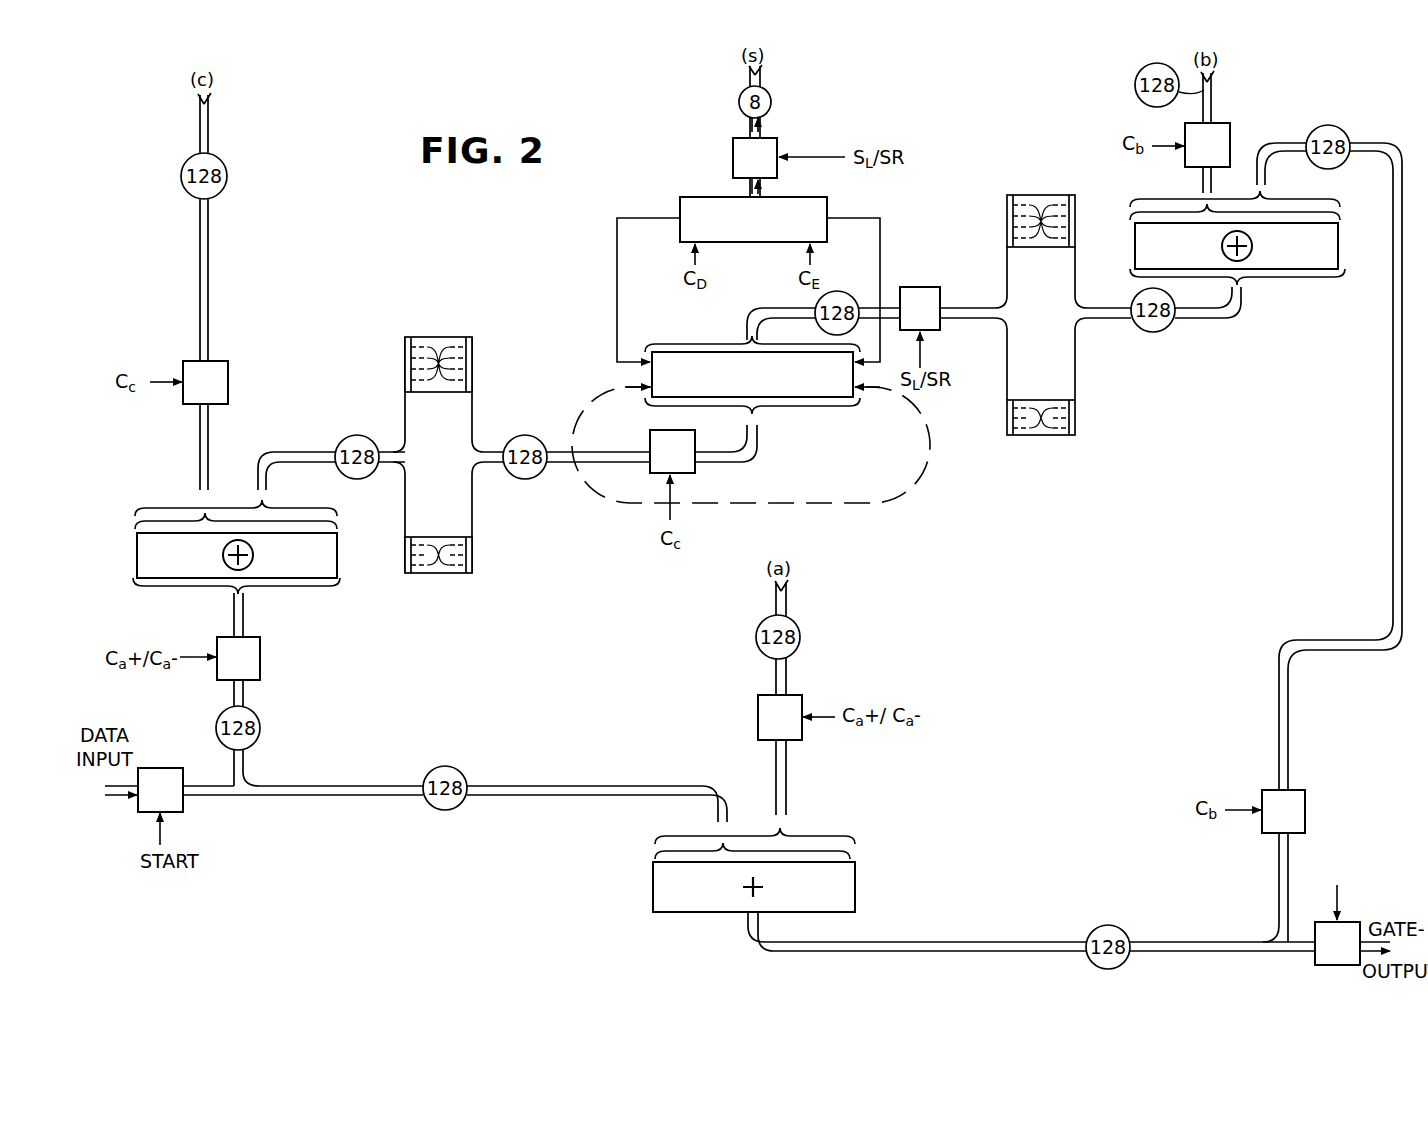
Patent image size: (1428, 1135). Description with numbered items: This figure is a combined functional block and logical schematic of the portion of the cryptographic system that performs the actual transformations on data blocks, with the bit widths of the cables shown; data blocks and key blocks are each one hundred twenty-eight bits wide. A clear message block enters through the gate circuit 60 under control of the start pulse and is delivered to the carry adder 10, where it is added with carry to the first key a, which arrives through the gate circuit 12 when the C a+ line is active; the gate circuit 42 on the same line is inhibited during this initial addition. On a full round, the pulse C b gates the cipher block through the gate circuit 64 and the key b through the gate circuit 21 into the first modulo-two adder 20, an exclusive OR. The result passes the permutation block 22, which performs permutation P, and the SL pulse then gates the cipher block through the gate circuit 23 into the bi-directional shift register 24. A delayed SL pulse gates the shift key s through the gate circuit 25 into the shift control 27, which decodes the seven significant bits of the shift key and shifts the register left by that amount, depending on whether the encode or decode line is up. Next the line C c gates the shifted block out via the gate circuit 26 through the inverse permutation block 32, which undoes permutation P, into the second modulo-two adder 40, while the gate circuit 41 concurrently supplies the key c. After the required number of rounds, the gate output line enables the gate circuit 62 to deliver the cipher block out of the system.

The carry adder 10 is at (855, 872).
The gate circuit 12 is at (802, 696).
The first modulo-two adder 20 is at (1338, 255).
The gate circuit 21 is at (1225, 128).
The permutation block 22 is at (1075, 368).
The gate circuit 23 is at (930, 290).
The bi-directional shift register 24 is at (835, 390).
The gate circuit 25 is at (777, 140).
The gate circuit 26 is at (690, 472).
The shift control 27 is at (818, 208).
The inverse permutation block 32 is at (468, 412).
The second modulo-two adder 40 is at (330, 554).
The gate circuit 41 is at (228, 376).
The gate circuit 42 is at (260, 657).
The gate circuit 60 is at (178, 808).
The gate circuit 62 is at (1350, 928).
The gate circuit 64 is at (1305, 811).